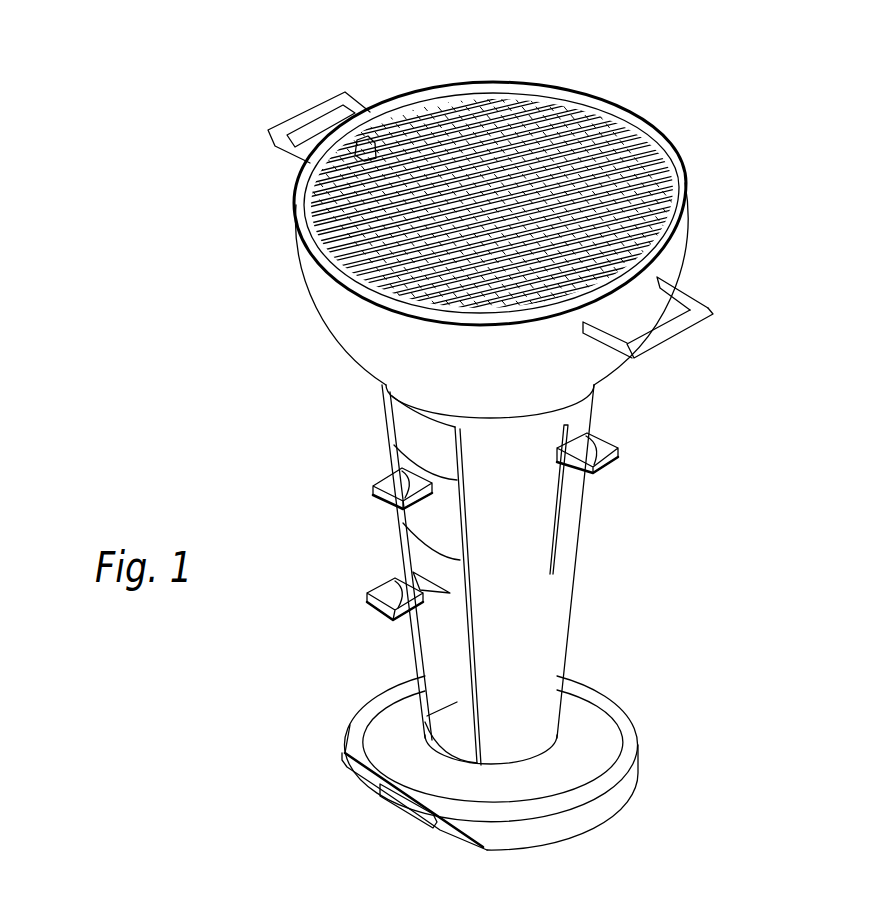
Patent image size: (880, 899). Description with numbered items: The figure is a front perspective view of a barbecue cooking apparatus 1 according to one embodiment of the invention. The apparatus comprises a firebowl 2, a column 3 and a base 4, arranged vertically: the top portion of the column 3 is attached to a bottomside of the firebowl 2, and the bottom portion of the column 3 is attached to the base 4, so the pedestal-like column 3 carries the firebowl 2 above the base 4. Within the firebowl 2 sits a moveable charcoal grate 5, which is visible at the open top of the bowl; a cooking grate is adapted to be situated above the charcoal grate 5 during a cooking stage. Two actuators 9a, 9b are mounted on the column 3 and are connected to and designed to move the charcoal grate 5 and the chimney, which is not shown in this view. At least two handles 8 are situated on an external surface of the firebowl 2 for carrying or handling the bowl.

The cooking apparatus 1 is at (447, 113).
The firebowl 2 is at (675, 253).
The column 3 is at (566, 598).
The base 4 is at (640, 748).
The charcoal grate 5 is at (676, 245).
The handles 8 is at (320, 104).
The actuator 9a is at (367, 610).
The actuator 9b is at (618, 456).